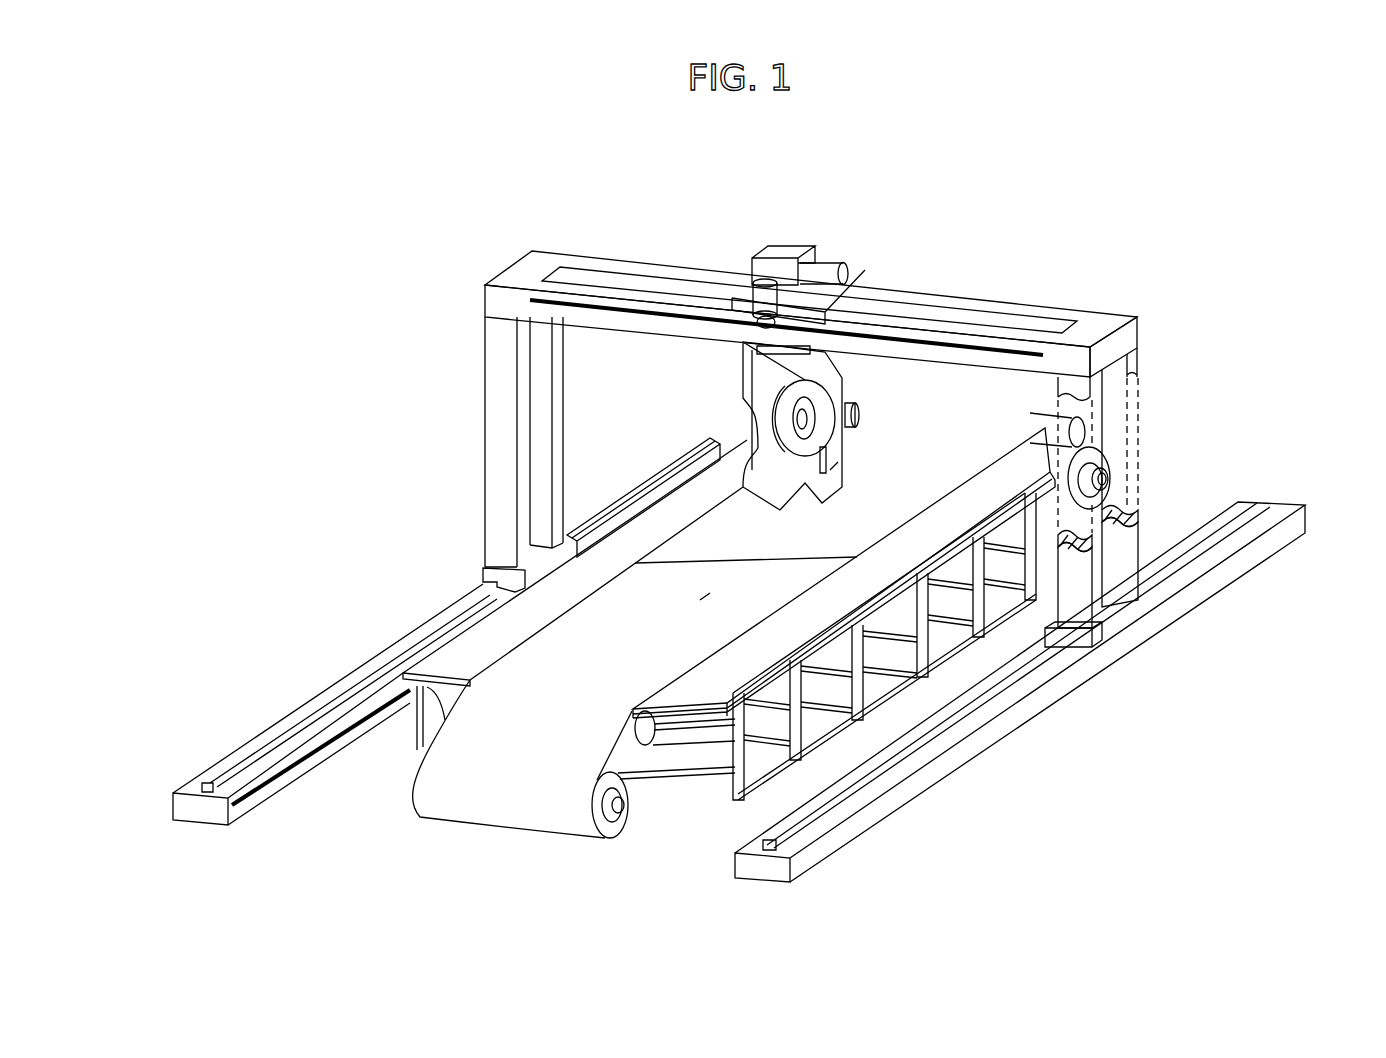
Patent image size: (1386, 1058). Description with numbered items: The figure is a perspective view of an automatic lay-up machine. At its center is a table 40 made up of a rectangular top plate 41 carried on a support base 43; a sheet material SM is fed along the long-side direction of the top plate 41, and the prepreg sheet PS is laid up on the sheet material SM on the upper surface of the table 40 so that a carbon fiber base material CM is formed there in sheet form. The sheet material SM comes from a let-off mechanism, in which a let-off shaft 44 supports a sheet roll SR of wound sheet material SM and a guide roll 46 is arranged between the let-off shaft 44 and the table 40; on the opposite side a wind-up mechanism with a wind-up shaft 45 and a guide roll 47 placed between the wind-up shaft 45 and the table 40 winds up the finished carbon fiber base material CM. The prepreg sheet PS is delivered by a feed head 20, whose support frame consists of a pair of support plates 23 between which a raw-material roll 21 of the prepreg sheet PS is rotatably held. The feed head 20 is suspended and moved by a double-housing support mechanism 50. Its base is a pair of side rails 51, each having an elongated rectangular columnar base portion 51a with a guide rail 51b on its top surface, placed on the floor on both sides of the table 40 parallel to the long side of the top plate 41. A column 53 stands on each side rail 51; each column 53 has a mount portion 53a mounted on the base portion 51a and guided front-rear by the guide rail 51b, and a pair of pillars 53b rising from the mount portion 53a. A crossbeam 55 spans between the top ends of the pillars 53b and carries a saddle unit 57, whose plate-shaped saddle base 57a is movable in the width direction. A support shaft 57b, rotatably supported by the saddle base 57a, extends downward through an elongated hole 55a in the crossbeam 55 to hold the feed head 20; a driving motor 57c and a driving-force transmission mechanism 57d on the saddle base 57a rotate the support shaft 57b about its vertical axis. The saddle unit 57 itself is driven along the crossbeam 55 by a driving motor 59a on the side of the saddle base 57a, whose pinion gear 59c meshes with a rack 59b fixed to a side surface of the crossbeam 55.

The double-housing support mechanism 50 is at (1137, 300).
The crossbeam 55 is at (482, 298).
The hole 55a is at (600, 277).
The column 53 is at (483, 447).
The mount portion 53a is at (485, 575).
The pillar 53b is at (530, 420).
The saddle unit 57 is at (748, 257).
The saddle base 57a is at (870, 297).
The support shaft 57b is at (826, 372).
The driving motor 57c is at (840, 263).
The driving-force transmission mechanism 57d is at (790, 250).
The driving motor 59a is at (748, 298).
The rack 59b is at (1010, 333).
The pinion gear 59c is at (757, 330).
The feed head 20 is at (850, 437).
The raw-material roll 21 is at (748, 462).
The support plate 23 is at (680, 445).
The prepreg sheet PS is at (835, 458).
The sheet roll SR is at (1115, 505).
The table 40 is at (417, 662).
The top plate 41 is at (483, 632).
The support base 43 is at (825, 740).
The wind-up shaft 45 is at (625, 812).
The guide roll 47 is at (647, 735).
The guide roll 46 is at (1080, 432).
The let-off shaft 44 is at (1098, 477).
The sheet material SM is at (905, 522).
The carbon fiber base material CM is at (738, 628).
The side rail 51 is at (337, 683).
The base portion 51a is at (190, 787).
The guide rail 51b is at (273, 727).